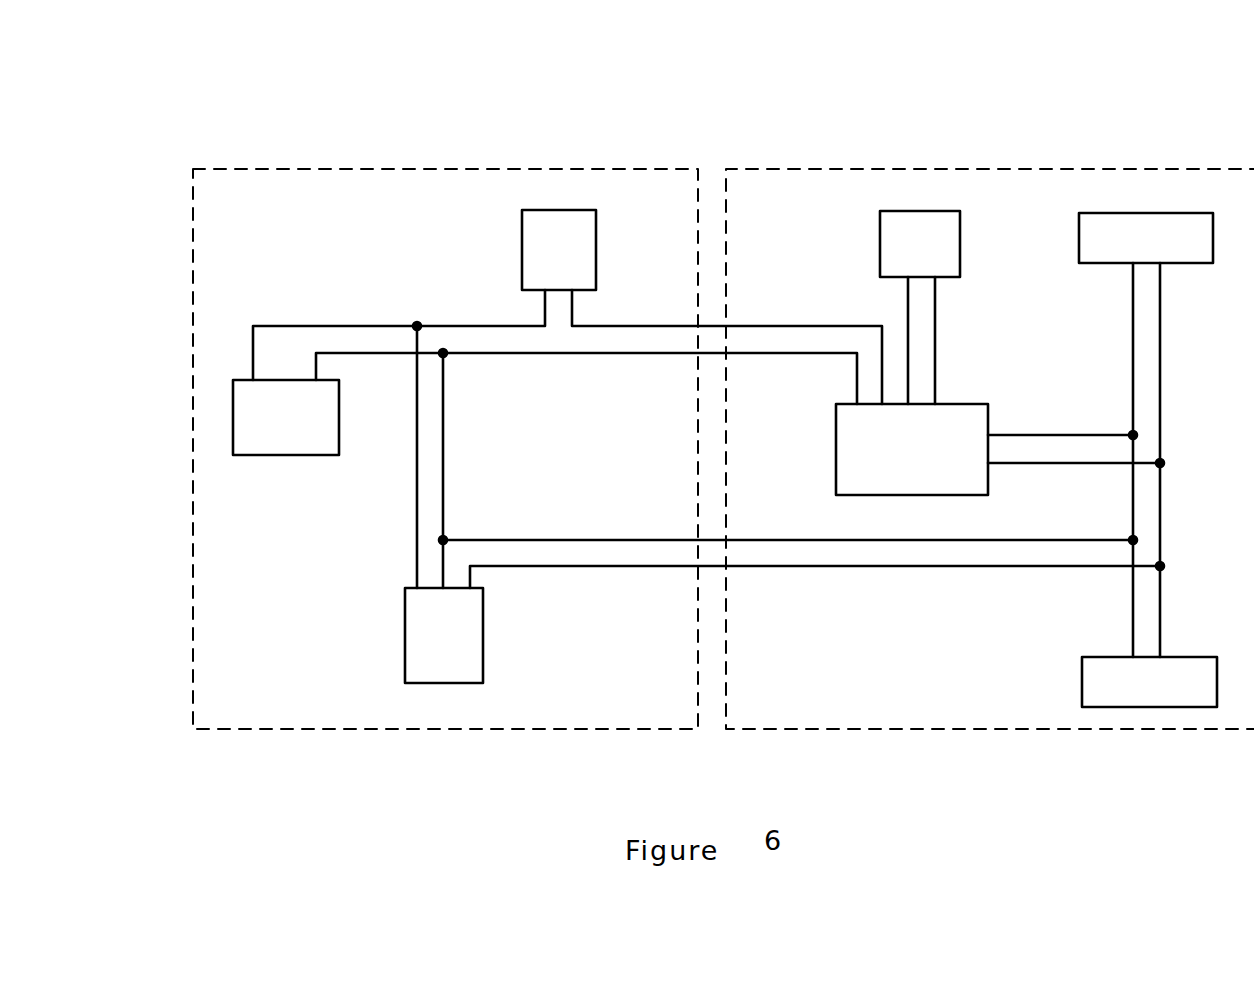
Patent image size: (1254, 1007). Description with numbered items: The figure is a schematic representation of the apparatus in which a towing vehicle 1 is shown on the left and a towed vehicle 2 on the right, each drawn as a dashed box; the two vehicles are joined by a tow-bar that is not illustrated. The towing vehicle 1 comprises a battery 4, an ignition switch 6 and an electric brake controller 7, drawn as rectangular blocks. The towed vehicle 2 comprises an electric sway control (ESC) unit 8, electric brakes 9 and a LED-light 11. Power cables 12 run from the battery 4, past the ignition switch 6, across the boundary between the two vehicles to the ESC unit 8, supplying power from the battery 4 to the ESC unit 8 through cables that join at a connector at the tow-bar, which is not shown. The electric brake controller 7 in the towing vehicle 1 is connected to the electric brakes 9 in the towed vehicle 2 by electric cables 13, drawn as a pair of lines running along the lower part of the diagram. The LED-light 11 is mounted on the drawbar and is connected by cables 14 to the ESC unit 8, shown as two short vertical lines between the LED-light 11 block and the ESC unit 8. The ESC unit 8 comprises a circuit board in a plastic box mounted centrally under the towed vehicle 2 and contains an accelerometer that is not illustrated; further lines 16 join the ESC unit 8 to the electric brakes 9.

The towing vehicle 1 is at (362, 168).
The towed vehicle 2 is at (922, 168).
The battery 4 is at (273, 455).
The ignition switch 6 is at (570, 210).
The electric brake controller 7 is at (403, 662).
The electric sway control (ESC) unit 8 is at (834, 462).
The electric brakes 9 is at (1163, 212).
The LED-light 11 is at (960, 213).
The power cables 12 is at (647, 326).
The electric cables 13 is at (550, 540).
The cables 14 is at (912, 300).
The connection line 16 is at (1035, 433).